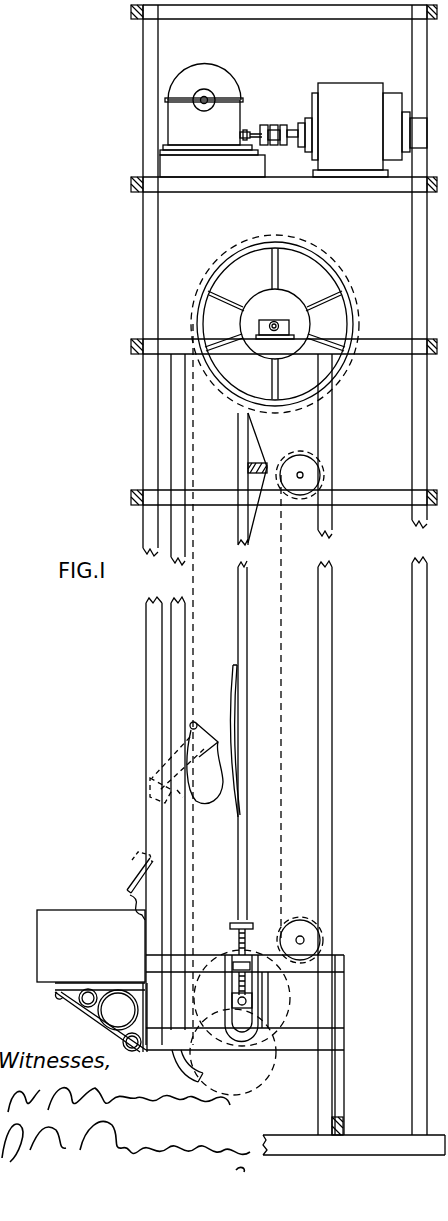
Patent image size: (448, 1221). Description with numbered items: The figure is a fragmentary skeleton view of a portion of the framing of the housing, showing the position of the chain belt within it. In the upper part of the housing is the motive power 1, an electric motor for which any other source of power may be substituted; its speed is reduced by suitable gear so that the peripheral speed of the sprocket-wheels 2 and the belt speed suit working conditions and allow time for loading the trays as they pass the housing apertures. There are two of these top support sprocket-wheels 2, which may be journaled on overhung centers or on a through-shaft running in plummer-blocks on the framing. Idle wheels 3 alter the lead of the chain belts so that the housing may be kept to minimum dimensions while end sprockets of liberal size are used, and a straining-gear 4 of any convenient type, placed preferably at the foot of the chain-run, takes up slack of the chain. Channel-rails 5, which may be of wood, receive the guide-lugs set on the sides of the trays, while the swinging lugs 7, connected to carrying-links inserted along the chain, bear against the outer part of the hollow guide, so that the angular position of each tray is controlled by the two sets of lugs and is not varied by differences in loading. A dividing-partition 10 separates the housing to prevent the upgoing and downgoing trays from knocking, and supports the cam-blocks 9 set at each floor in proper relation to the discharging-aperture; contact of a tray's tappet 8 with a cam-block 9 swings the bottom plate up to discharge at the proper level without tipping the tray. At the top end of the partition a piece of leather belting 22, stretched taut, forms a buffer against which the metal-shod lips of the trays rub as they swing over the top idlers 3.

The motive power 1 is at (275, 98).
The sprocket-wheels 2 is at (275, 280).
The idle wheels 3 is at (307, 470).
The straining-gear 4 is at (243, 985).
The channel-rails 5 is at (178, 683).
The swinging lugs 7 is at (197, 727).
The tappet 8 is at (186, 763).
The cam-block 9 is at (232, 785).
The dividing-partition 10 is at (243, 623).
The leather belting 22 is at (258, 442).